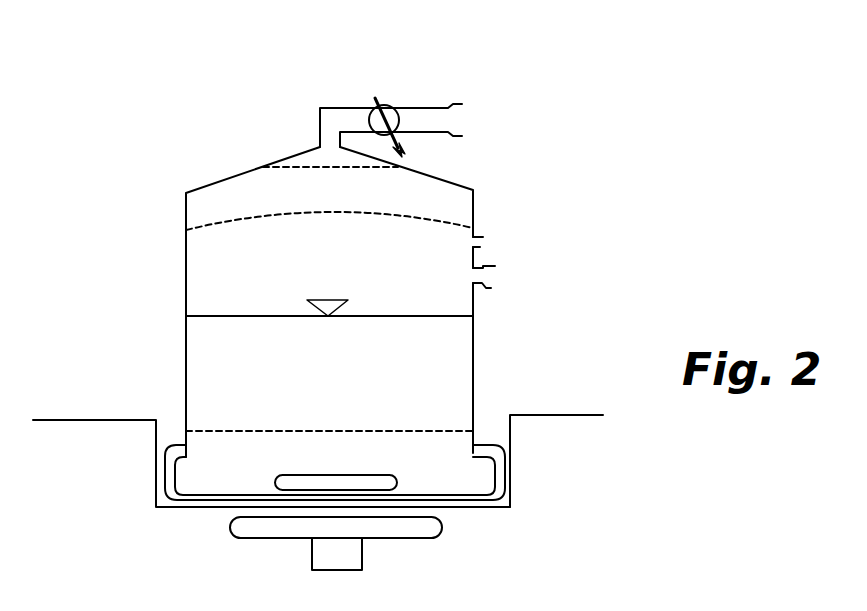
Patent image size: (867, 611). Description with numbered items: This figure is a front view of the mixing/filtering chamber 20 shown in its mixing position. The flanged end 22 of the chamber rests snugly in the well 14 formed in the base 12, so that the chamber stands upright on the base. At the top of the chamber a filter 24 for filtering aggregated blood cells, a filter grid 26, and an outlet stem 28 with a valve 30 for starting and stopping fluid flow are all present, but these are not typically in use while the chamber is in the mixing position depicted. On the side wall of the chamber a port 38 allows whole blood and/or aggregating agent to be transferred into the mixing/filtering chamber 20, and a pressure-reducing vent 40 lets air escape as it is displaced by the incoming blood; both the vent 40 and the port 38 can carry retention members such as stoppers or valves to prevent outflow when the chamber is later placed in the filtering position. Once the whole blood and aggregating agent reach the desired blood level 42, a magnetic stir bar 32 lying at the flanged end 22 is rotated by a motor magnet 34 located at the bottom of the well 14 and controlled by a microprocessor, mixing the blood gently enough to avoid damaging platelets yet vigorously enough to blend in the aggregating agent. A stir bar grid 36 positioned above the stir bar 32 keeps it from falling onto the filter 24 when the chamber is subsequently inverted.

The base 12 is at (558, 415).
The well 14 is at (163, 433).
The mixing/filtering chamber 20 is at (478, 376).
The flanged end 22 is at (508, 485).
The filter 24 is at (197, 229).
The filter grid 26 is at (304, 167).
The outlet stem 28 is at (320, 108).
The valve 30 is at (383, 103).
The magnetic stir bar 32 is at (287, 480).
The motor magnet 34 is at (425, 537).
The stir bar grid 36 is at (205, 431).
The port 38 is at (485, 285).
The pressure-reducing vent 40 is at (483, 238).
The blood level 42 is at (200, 316).